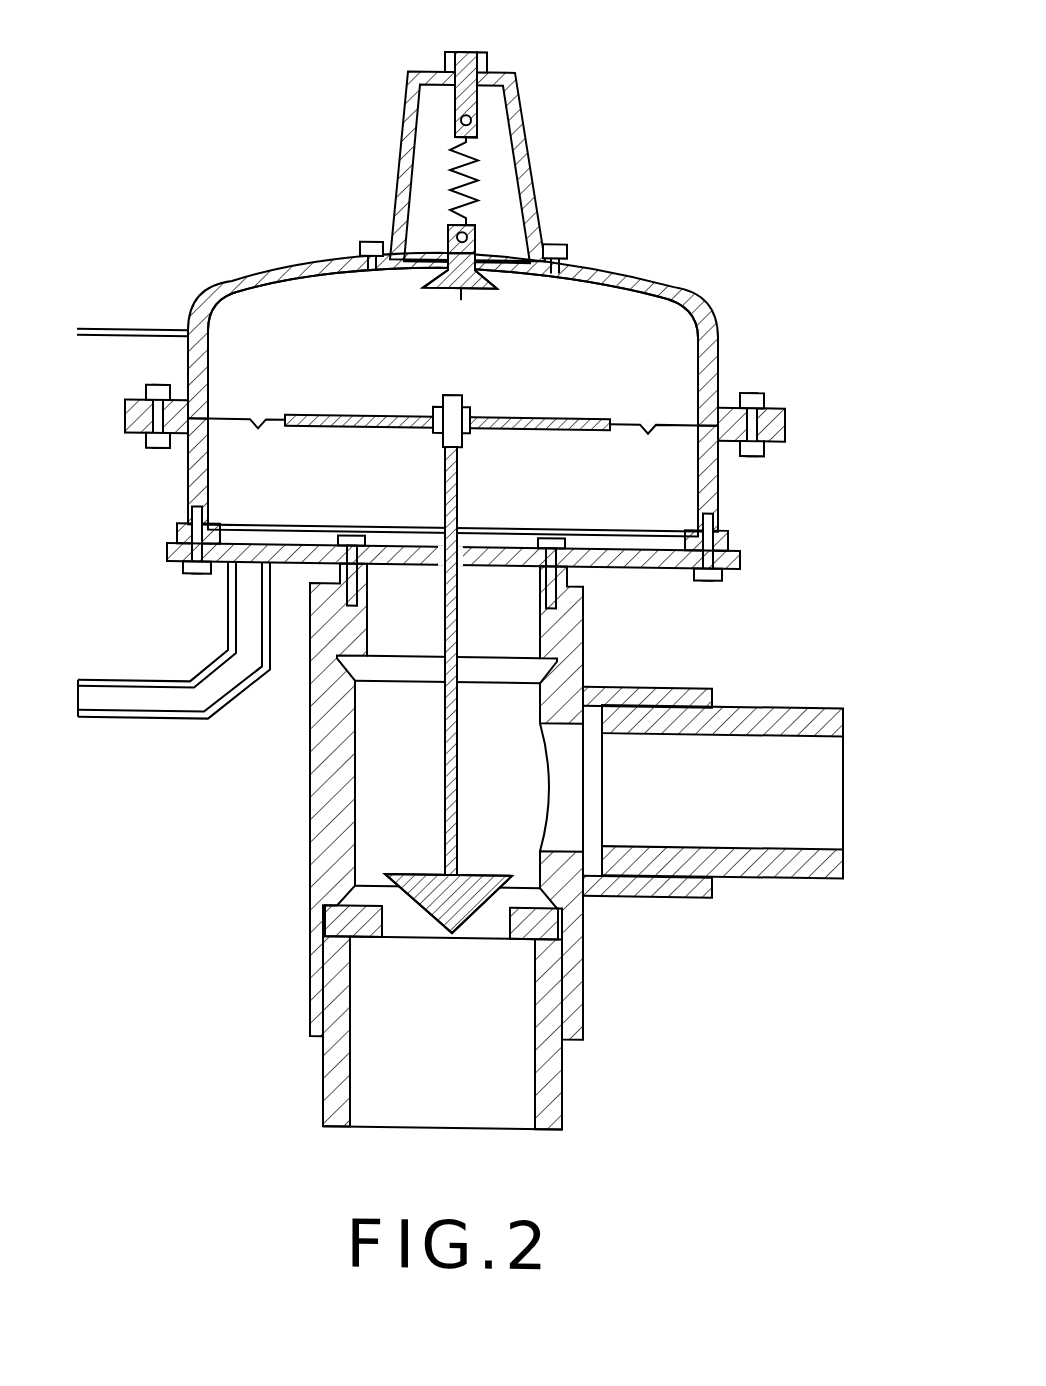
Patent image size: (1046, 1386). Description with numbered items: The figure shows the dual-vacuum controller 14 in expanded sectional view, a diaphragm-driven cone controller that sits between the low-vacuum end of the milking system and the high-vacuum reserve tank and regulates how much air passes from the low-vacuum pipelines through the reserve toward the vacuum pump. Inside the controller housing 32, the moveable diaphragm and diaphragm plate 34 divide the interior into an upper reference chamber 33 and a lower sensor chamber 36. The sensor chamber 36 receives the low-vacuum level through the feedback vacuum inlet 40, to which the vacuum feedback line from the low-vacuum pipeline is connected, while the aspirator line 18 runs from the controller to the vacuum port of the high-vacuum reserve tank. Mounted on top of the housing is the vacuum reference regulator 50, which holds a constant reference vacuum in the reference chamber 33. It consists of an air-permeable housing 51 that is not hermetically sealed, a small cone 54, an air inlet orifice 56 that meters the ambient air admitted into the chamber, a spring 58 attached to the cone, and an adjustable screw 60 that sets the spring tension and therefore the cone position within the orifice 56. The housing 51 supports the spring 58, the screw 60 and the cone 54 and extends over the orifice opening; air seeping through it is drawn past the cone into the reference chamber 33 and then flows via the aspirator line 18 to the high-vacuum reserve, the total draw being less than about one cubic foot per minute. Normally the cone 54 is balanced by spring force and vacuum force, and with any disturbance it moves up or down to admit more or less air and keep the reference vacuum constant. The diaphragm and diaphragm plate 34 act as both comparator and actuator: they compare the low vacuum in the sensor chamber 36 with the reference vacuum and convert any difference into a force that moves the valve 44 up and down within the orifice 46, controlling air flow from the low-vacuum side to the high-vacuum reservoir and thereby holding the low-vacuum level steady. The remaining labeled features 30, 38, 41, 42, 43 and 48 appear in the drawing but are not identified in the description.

The dual-vacuum controller 14 is at (500, 867).
The aspirator line 18 is at (142, 333).
The valve body 30 is at (312, 907).
The controller housing 32 is at (721, 337).
The reference chamber 33 is at (612, 331).
The diaphragm and diaphragm plate 34 is at (509, 416).
The sensor chamber 36 is at (670, 500).
The valve stem 38 is at (462, 840).
The feedback vacuum inlet 40 is at (147, 704).
The bolts 41 is at (178, 539).
The outlet port 42 is at (768, 825).
The flange bolts 43 is at (186, 360).
The valve 44 is at (580, 903).
The orifice 46 is at (483, 930).
The discharge outlet 48 is at (438, 1097).
The vacuum reference regulator 50 is at (548, 205).
The air permeable housing 51 is at (536, 128).
The small cone 54 is at (458, 294).
The air inlet orifice 56 is at (446, 238).
The spring 58 is at (448, 188).
The adjustable screw 60 is at (460, 116).